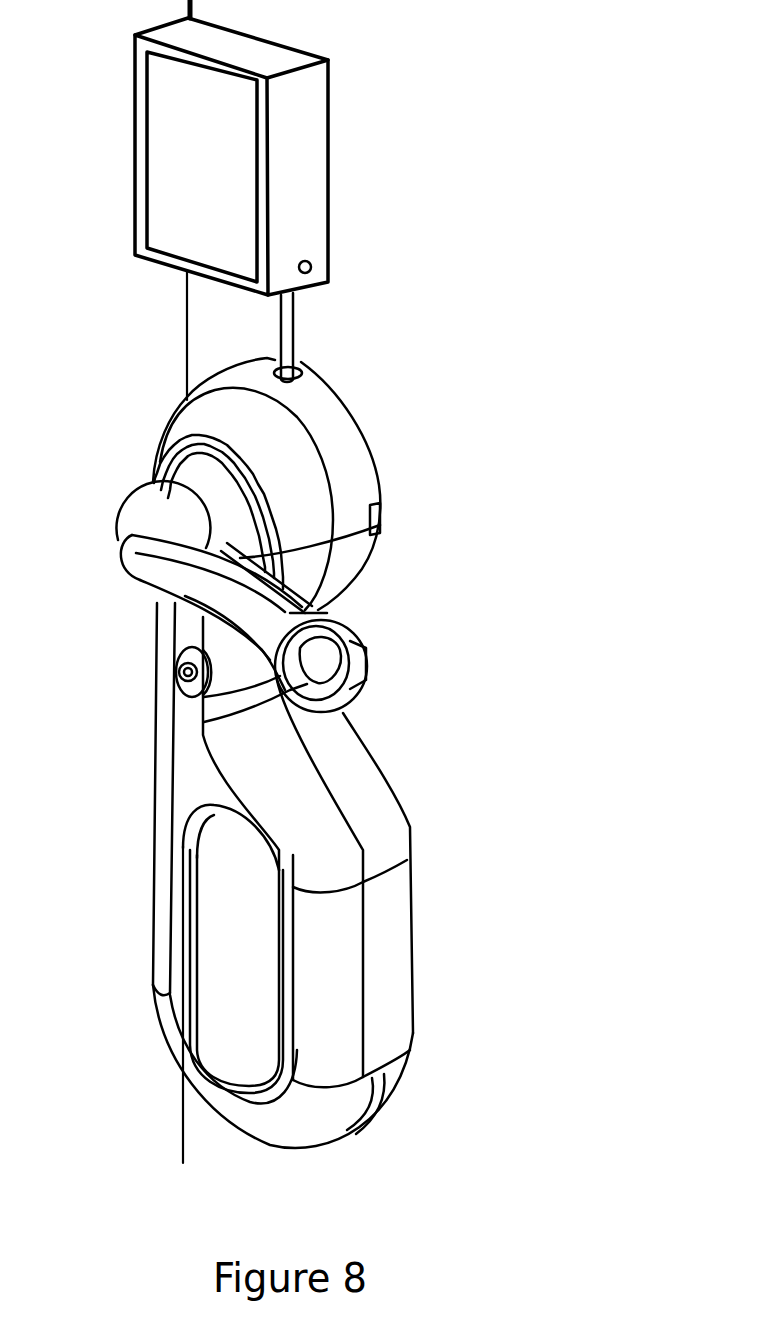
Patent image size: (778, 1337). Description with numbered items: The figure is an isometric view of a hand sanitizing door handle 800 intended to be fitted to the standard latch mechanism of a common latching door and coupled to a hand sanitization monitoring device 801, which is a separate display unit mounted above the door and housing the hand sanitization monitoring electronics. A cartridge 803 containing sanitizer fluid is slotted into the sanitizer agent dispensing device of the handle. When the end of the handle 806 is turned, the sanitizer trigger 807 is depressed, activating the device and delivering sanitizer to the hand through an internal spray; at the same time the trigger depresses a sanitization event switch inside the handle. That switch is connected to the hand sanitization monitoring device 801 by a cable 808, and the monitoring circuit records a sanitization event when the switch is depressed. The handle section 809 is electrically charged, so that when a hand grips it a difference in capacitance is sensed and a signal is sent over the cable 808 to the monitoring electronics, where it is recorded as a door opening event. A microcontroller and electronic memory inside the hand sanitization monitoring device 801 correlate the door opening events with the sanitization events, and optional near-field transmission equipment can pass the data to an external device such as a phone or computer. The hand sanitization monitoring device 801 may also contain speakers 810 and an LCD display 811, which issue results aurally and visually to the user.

The hand sanitizing door handle 800 is at (348, 470).
The hand sanitization monitoring device 801 is at (308, 147).
The cartridge 803 is at (195, 372).
The end of the handle 806 is at (313, 610).
The sanitizer trigger 807 is at (355, 648).
The cable 808 is at (293, 348).
The handle section 809 is at (140, 522).
The speakers 810 is at (311, 267).
The LCD display 811 is at (175, 223).